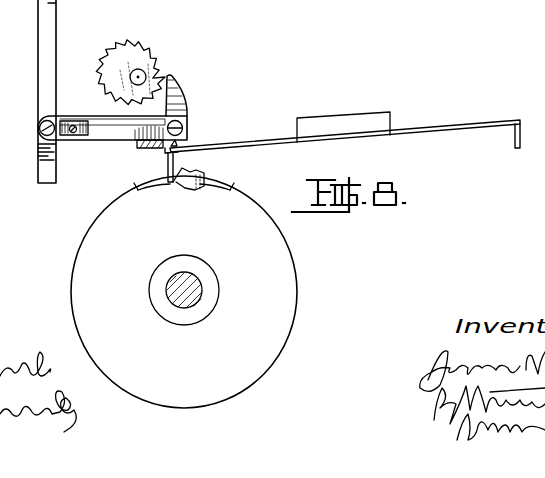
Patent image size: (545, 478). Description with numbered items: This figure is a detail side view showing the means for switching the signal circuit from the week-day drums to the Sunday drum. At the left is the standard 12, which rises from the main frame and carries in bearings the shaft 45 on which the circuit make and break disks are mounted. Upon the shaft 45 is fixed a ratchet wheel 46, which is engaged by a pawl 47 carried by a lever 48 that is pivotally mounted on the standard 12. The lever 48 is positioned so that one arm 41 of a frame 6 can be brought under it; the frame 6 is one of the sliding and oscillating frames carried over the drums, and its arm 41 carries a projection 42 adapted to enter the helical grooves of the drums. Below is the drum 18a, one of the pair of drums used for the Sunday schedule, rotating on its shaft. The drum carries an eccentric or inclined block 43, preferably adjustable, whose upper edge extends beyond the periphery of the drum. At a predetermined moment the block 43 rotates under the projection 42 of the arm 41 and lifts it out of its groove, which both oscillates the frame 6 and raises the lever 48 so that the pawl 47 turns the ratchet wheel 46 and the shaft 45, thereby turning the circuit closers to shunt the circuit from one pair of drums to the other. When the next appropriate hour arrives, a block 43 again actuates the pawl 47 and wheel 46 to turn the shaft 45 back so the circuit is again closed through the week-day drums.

The standard 12 is at (35, 83).
The lever 48 is at (98, 140).
The pawl 47 is at (186, 103).
The ratchet wheel 46 is at (130, 72).
The shaft 45 is at (140, 75).
The arm 41 is at (229, 142).
The frame 6 is at (352, 116).
The projection 42 is at (166, 163).
The drum 18a is at (124, 252).
The inclined block 43 is at (187, 182).